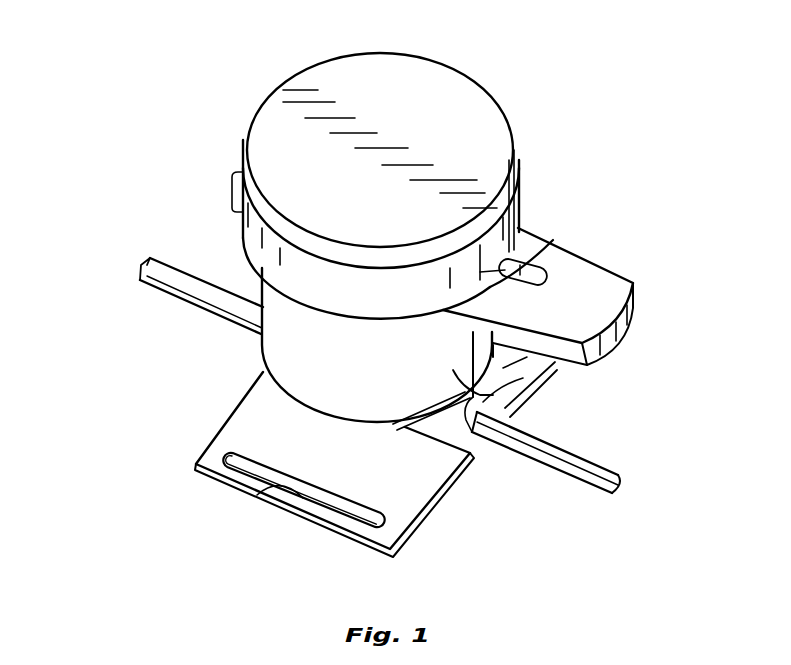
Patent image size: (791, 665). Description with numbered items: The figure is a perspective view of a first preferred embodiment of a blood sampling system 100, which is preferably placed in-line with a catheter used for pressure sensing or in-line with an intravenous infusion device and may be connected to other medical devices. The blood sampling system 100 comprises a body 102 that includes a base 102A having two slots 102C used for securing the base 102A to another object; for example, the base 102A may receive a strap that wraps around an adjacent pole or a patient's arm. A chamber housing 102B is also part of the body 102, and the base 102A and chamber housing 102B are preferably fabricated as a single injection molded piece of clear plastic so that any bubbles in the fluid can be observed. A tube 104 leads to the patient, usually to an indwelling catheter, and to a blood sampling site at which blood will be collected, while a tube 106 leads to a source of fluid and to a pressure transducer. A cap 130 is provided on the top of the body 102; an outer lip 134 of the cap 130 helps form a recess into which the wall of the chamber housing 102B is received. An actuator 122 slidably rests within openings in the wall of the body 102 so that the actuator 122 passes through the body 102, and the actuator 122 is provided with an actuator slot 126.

The blood sampling system 100 is at (553, 44).
The body 102 is at (247, 359).
The base 102A is at (423, 473).
The chamber housing 102B is at (468, 410).
The slots 102C is at (257, 493).
The tube 104 is at (185, 285).
The tube 106 is at (578, 470).
The actuator 122 is at (590, 277).
The actuator slot 126 is at (535, 259).
The cap 130 is at (472, 122).
The outer lip 134 is at (520, 197).